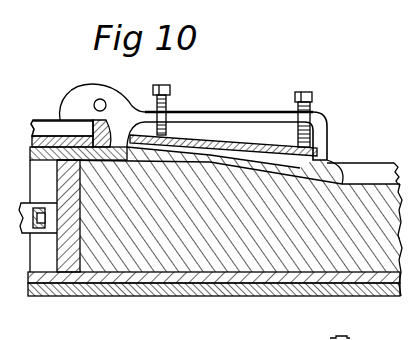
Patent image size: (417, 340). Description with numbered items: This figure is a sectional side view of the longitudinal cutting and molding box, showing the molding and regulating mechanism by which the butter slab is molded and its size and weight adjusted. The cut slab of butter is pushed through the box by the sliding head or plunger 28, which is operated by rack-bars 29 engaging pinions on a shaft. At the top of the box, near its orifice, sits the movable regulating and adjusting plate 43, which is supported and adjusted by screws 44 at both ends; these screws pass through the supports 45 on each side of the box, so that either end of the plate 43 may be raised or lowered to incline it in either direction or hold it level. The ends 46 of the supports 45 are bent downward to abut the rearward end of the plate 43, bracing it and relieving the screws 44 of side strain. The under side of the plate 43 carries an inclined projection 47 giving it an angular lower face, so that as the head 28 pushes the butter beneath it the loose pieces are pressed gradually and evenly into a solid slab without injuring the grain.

The sliding head or plunger 28 is at (70, 266).
The rack-bars 29 is at (21, 199).
The regulating and adjusting plate 43 is at (223, 139).
The screws 44 is at (171, 100).
The supports 45 is at (232, 113).
The bent ends of the supports 46 is at (328, 148).
The inclined projection 47 is at (237, 218).